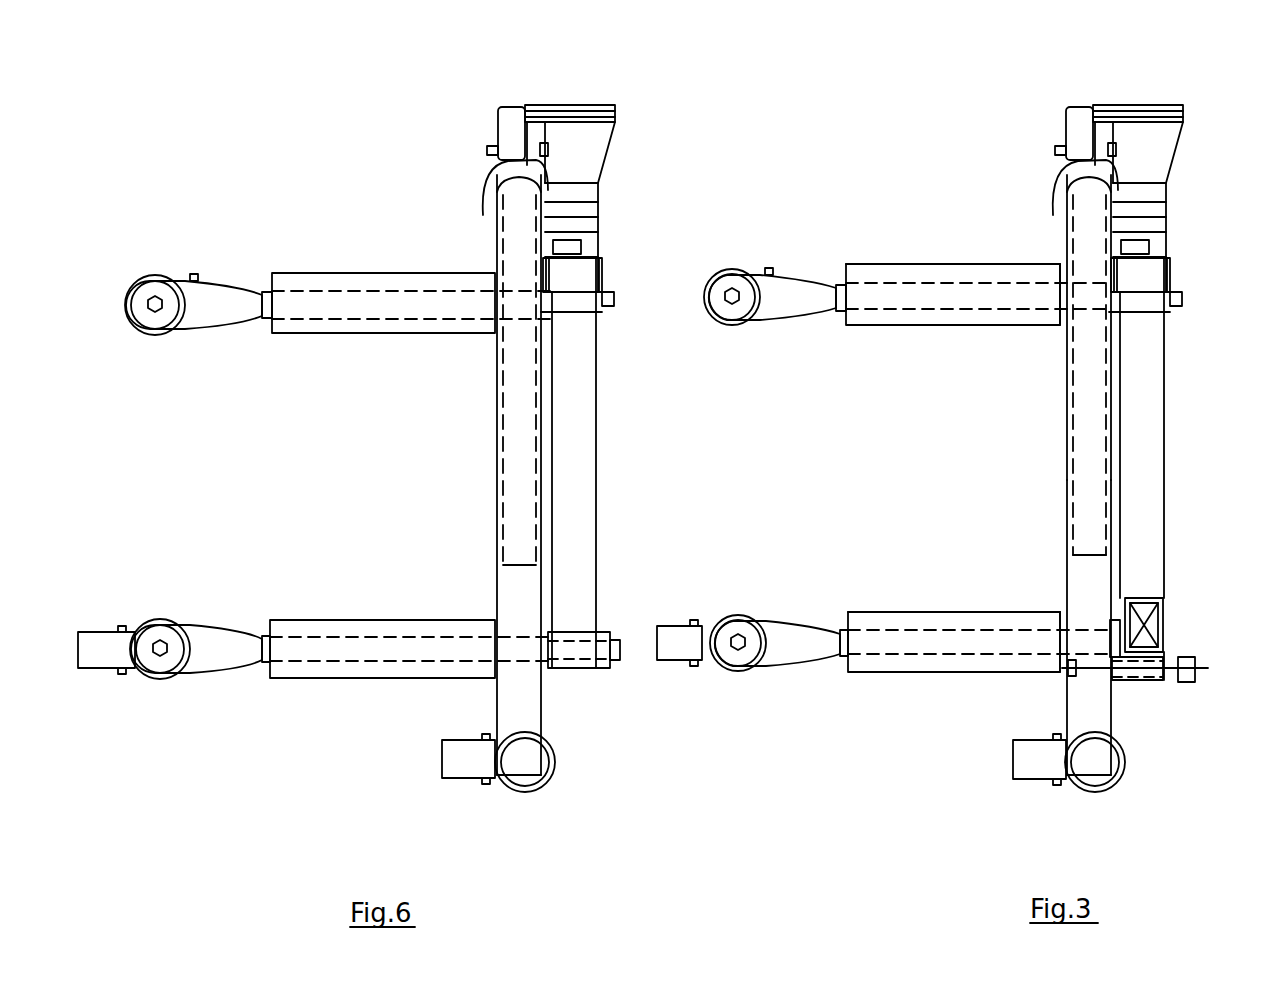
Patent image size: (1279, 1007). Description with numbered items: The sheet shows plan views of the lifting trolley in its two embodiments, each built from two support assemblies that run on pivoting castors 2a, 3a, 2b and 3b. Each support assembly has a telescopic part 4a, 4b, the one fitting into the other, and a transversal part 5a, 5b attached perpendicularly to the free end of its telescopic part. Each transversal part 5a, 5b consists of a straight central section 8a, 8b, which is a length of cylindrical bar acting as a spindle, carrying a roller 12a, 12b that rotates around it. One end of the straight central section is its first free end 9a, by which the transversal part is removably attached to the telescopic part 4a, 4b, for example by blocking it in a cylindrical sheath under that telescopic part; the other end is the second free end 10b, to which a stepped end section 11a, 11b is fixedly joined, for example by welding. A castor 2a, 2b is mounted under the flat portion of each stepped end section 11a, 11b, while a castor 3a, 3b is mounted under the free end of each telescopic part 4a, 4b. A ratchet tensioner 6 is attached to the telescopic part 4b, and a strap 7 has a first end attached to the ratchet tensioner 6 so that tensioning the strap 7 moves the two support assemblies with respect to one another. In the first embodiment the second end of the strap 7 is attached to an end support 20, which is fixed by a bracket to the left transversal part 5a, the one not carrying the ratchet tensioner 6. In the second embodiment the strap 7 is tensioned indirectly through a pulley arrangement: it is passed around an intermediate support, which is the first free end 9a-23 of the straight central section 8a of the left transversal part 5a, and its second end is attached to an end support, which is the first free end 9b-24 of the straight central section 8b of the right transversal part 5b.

In FIG. 6, the strap 7 is at (597, 555).
In FIG. 3, the strap 7 is at (1163, 352).
In FIG. 3, the ratchet tensioner 6 is at (1180, 108).
In FIG. 3, the castor 3b is at (1075, 108).
In FIG. 3, the castor 3a is at (1020, 765).
In FIG. 3, the telescopic part 4b is at (1078, 370).
In FIG. 3, the telescopic part 4a is at (1100, 765).
In FIG. 6, the transversal part 5b is at (365, 350).
In FIG. 3, the transversal part 5b is at (878, 247).
In FIG. 6, the transversal part 5a is at (350, 690).
In FIG. 3, the transversal part 5a is at (915, 690).
In FIG. 3, the castor 2b is at (735, 272).
In FIG. 3, the castor 2a is at (672, 630).
In FIG. 3, the straight central section 8b is at (920, 298).
In FIG. 3, the straight central section 8a is at (892, 633).
In FIG. 3, the first free end 9a is at (1118, 633).
In FIG. 6, the first free end forming end support 9b-24 is at (580, 300).
In FIG. 6, the first free end forming intermediate support 9a-23 is at (578, 655).
In FIG. 3, the second free end 10b is at (840, 308).
In FIG. 3, the stepped end section 11b is at (760, 305).
In FIG. 3, the stepped end section 11a is at (730, 628).
In FIG. 3, the roller 12b is at (962, 262).
In FIG. 3, the roller 12a is at (950, 612).
In FIG. 3, the end support 20 is at (1120, 675).